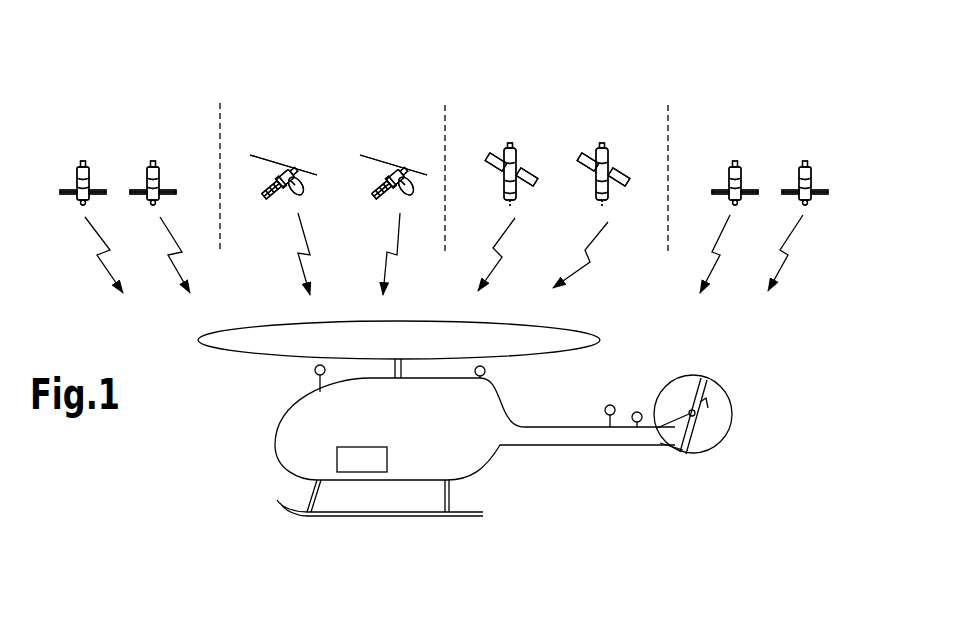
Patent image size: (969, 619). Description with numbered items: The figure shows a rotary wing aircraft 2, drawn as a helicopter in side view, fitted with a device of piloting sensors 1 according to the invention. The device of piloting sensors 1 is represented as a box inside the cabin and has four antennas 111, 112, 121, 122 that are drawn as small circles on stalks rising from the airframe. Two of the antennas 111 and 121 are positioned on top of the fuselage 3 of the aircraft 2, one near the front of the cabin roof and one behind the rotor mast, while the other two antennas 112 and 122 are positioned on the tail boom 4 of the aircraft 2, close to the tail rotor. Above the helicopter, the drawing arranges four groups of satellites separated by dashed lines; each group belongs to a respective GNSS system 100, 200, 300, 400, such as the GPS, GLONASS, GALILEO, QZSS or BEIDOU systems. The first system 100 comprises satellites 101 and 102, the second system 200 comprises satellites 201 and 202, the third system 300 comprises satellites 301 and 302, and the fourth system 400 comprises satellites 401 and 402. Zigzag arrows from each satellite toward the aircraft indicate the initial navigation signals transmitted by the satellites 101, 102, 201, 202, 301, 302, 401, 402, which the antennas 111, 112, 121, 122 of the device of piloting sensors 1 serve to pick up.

The device of piloting sensors 1 is at (370, 447).
The rotary wing aircraft 2 is at (203, 453).
The fuselage 3 is at (485, 464).
The tail boom 4 is at (622, 446).
The GNSS system 100 is at (117, 120).
The satellite 101 is at (78, 165).
The satellite 102 is at (153, 164).
The antenna 111 is at (315, 371).
The antenna 112 is at (610, 405).
The antenna 121 is at (485, 368).
The antenna 122 is at (637, 412).
The GNSS system 200 is at (337, 123).
The satellite 201 is at (297, 160).
The satellite 202 is at (405, 160).
The GNSS system 300 is at (547, 97).
The satellite 301 is at (511, 145).
The satellite 302 is at (602, 145).
The GNSS system 400 is at (773, 115).
The satellite 401 is at (733, 165).
The satellite 402 is at (806, 163).